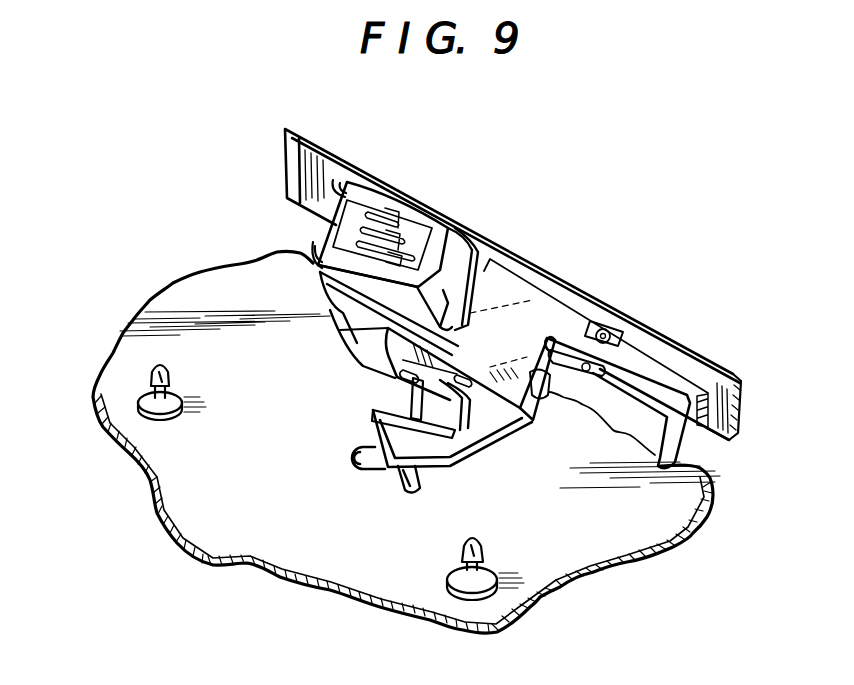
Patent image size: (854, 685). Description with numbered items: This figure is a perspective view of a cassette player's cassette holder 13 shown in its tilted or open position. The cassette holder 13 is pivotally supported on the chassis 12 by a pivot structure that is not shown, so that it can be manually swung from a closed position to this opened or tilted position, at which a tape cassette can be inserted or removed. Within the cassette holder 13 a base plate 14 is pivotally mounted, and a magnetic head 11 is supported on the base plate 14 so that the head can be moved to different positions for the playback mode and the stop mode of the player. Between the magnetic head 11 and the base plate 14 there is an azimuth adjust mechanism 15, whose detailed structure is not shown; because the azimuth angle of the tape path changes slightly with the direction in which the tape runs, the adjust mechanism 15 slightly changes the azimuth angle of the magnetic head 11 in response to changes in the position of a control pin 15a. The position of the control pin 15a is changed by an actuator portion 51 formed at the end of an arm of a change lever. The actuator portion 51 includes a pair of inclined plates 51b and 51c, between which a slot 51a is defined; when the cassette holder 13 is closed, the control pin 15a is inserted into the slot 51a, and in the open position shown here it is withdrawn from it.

The magnetic head 11 is at (410, 203).
The chassis 12 is at (225, 517).
The cassette holder 13 is at (636, 342).
The base plate 14 is at (680, 376).
The azimuth adjust mechanism 15 is at (419, 409).
The control pin 15a is at (392, 395).
The actuator portion 51 is at (409, 451).
The slot 51a is at (368, 475).
The inclined plate 51b is at (453, 465).
The inclined plate 51c is at (385, 418).